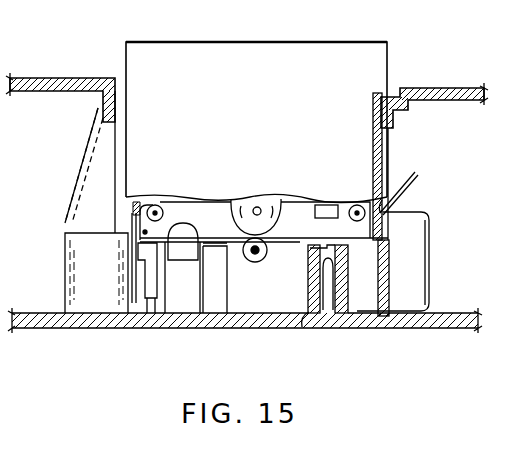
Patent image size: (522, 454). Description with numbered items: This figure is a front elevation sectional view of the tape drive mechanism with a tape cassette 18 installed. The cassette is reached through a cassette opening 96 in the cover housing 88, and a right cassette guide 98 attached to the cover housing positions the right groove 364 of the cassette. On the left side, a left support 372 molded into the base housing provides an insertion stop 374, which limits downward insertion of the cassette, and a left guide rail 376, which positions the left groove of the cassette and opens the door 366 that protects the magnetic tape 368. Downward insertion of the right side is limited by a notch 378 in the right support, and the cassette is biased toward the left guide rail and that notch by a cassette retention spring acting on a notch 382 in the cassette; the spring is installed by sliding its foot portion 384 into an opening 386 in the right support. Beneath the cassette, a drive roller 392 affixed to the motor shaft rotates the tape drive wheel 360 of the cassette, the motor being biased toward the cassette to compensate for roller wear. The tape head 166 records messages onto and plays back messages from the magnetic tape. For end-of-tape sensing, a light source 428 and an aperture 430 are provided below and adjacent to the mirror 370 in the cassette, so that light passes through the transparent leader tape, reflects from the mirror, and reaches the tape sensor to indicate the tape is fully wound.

The tape cassette 18 is at (291, 41).
The cassette opening 96 is at (113, 78).
The cover housing 88 is at (463, 88).
The right cassette guide 98 is at (394, 119).
The right groove 364 is at (392, 153).
The magnetic tape 368 is at (302, 220).
The tape drive wheel 360 is at (300, 220).
The mirror 370 is at (344, 178).
The notch 382 is at (385, 211).
The notch 378 is at (383, 235).
The foot portion 384 is at (407, 312).
The left guide rail 376 is at (112, 189).
The insertion stop 374 is at (88, 233).
The left support 372 is at (65, 298).
The tape head 166 is at (177, 261).
The drive roller 392 is at (245, 262).
The aperture 430 is at (312, 248).
The light source 428 is at (325, 313).
The door 366 is at (148, 328).
The opening 386 is at (392, 330).